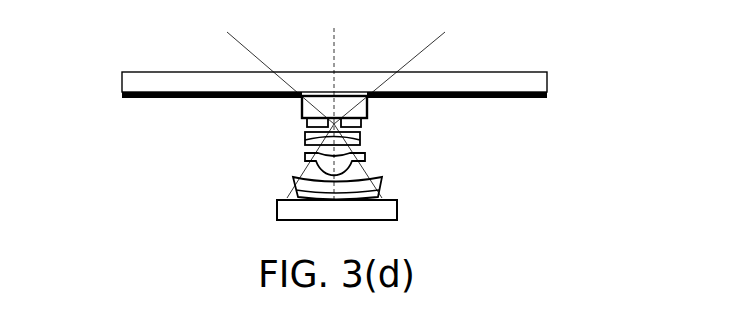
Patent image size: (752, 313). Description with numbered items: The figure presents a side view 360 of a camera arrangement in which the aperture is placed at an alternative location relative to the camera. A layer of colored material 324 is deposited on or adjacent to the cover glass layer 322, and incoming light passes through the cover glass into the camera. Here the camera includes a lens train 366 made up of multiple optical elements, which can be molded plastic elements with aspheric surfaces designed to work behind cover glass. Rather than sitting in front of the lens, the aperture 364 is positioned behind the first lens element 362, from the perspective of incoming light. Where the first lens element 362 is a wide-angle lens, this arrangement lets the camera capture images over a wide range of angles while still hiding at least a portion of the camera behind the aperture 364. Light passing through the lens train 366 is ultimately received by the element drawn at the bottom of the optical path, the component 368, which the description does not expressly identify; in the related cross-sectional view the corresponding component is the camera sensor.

The cover glass layer 322 is at (122, 83).
The colored material layer 324 is at (122, 96).
The view 360 is at (638, 88).
The first lens element 362 is at (302, 106).
The aperture 364 is at (365, 122).
The lens train 366 is at (388, 160).
The image sensor 368 is at (277, 212).